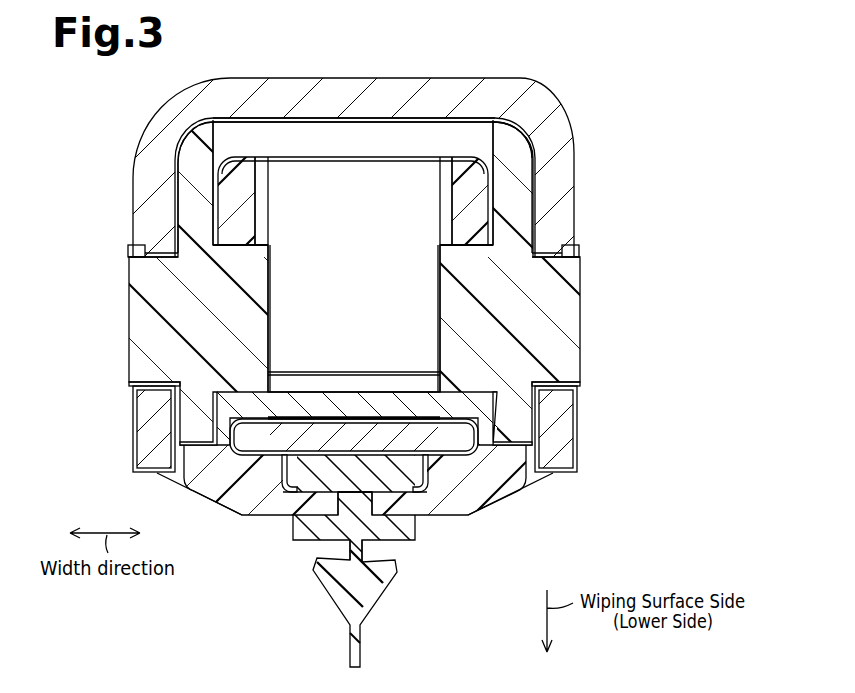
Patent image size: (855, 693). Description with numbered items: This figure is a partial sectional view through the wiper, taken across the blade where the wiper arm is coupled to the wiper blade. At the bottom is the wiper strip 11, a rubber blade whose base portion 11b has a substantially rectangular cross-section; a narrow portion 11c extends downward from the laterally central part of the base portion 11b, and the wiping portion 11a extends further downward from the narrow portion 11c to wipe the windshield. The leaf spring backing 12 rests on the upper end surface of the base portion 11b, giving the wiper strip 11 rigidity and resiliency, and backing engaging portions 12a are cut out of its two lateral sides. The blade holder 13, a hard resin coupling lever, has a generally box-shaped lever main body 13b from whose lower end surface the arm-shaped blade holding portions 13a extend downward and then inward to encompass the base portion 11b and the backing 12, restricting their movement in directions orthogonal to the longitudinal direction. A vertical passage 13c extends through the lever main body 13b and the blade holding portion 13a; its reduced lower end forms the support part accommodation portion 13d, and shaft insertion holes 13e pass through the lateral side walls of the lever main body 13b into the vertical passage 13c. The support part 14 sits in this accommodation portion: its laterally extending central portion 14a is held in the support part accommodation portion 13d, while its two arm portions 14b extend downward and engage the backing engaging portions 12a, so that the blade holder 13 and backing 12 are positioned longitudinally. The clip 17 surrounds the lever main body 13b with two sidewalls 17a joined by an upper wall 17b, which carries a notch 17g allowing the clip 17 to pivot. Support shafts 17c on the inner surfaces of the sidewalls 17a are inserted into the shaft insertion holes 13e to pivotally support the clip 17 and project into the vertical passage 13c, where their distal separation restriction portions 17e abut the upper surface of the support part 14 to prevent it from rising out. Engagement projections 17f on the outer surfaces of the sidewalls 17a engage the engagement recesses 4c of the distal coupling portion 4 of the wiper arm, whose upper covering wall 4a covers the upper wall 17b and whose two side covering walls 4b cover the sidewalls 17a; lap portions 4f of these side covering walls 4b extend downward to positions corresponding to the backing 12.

The distal coupling portion 4 is at (140, 139).
The upper covering wall 4a is at (306, 112).
The side covering wall 4b is at (150, 186).
The engagement recess 4c is at (140, 383).
The lap portion 4f is at (150, 444).
The wiper strip 11 is at (347, 560).
The wiping portion 11a is at (361, 640).
The base portion 11b is at (316, 559).
The narrow portion 11c is at (373, 500).
The backing 12 is at (346, 448).
The backing engaging portion 12a is at (284, 478).
The blade holder 13 is at (392, 256).
The blade holding portion 13a is at (268, 516).
The lever main body 13b is at (534, 194).
The vertical passage 13c is at (447, 197).
The support part accommodation portion 13d is at (412, 392).
The shaft insertion hole 13e is at (250, 250).
The support part 14 is at (338, 429).
The central portion 14a is at (340, 414).
The arm portion 14b is at (252, 455).
The clip 17 is at (394, 250).
The sidewall 17a is at (185, 216).
The upper wall 17b is at (250, 122).
The support shaft 17c is at (215, 412).
The separation restriction portion 17e is at (447, 400).
The engagement projection 17f is at (132, 250).
The notch 17g is at (522, 138).